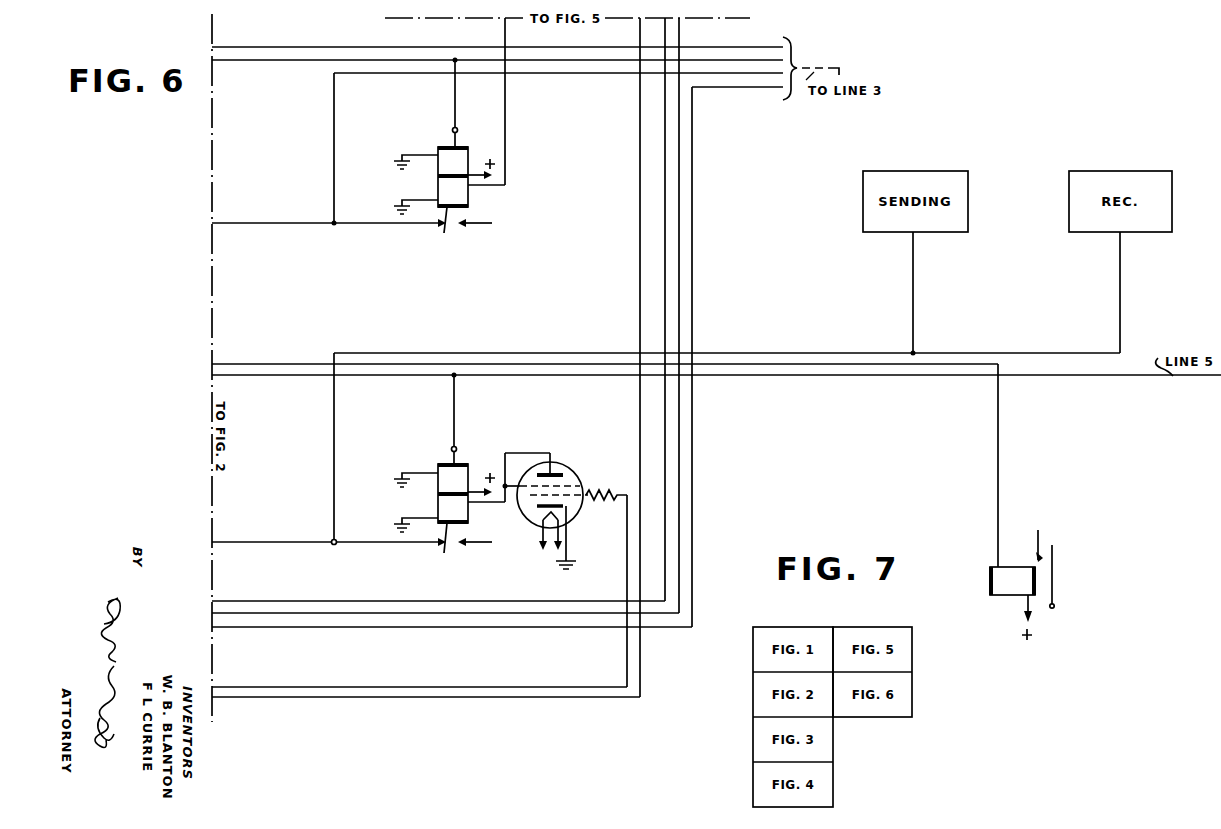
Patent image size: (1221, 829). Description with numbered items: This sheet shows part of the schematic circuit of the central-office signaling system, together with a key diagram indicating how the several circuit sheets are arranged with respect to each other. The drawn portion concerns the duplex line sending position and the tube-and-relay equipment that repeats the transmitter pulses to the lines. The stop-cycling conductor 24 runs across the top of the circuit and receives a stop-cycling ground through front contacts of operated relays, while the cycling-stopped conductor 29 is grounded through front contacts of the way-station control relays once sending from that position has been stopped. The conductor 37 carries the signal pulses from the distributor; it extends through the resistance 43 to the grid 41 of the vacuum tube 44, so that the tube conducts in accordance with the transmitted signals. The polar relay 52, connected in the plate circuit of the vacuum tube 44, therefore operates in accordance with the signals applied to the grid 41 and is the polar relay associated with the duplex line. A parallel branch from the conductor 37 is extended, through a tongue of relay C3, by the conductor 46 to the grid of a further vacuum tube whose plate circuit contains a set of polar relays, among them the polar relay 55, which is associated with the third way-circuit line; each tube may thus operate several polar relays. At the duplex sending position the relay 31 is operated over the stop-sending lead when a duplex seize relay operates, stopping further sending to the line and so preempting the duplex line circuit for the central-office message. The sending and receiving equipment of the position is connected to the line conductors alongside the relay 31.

The stop-cycling conductor 24 is at (271, 47).
The cycling-stopped conductor 29 is at (665, 35).
The polar relay 55 is at (462, 158).
The conductor 46 is at (640, 133).
The polar relay 52 is at (462, 473).
The vacuum tube 44 is at (566, 470).
The grid 41 is at (567, 495).
The resistance 43 is at (604, 506).
The conductor 37 is at (413, 687).
The relay 31 is at (1006, 592).